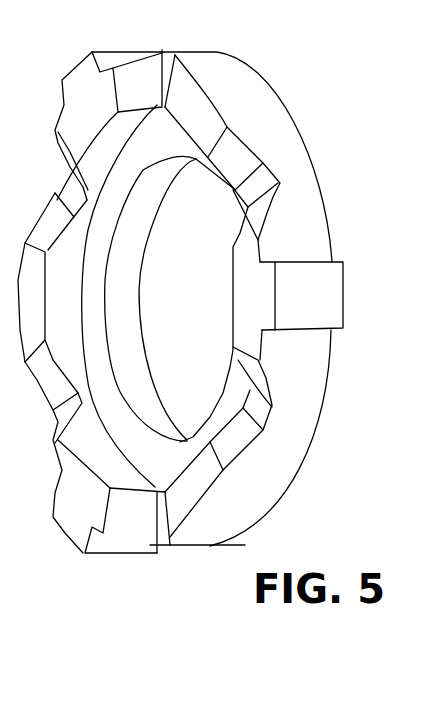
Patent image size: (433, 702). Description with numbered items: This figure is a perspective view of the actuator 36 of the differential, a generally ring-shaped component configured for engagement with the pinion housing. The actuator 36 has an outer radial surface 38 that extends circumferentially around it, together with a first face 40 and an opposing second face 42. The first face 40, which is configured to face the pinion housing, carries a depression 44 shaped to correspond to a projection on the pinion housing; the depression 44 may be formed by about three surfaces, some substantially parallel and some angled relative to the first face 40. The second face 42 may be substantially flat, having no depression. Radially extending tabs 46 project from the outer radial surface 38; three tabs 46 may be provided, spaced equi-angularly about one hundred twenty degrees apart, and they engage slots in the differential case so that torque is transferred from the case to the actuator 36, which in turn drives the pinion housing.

The actuator 36 is at (368, 289).
The outer radial surface 38 is at (257, 88).
The first face 40 is at (242, 323).
The second face 42 is at (318, 408).
The depression 44 is at (243, 190).
The tab 46 is at (120, 55).